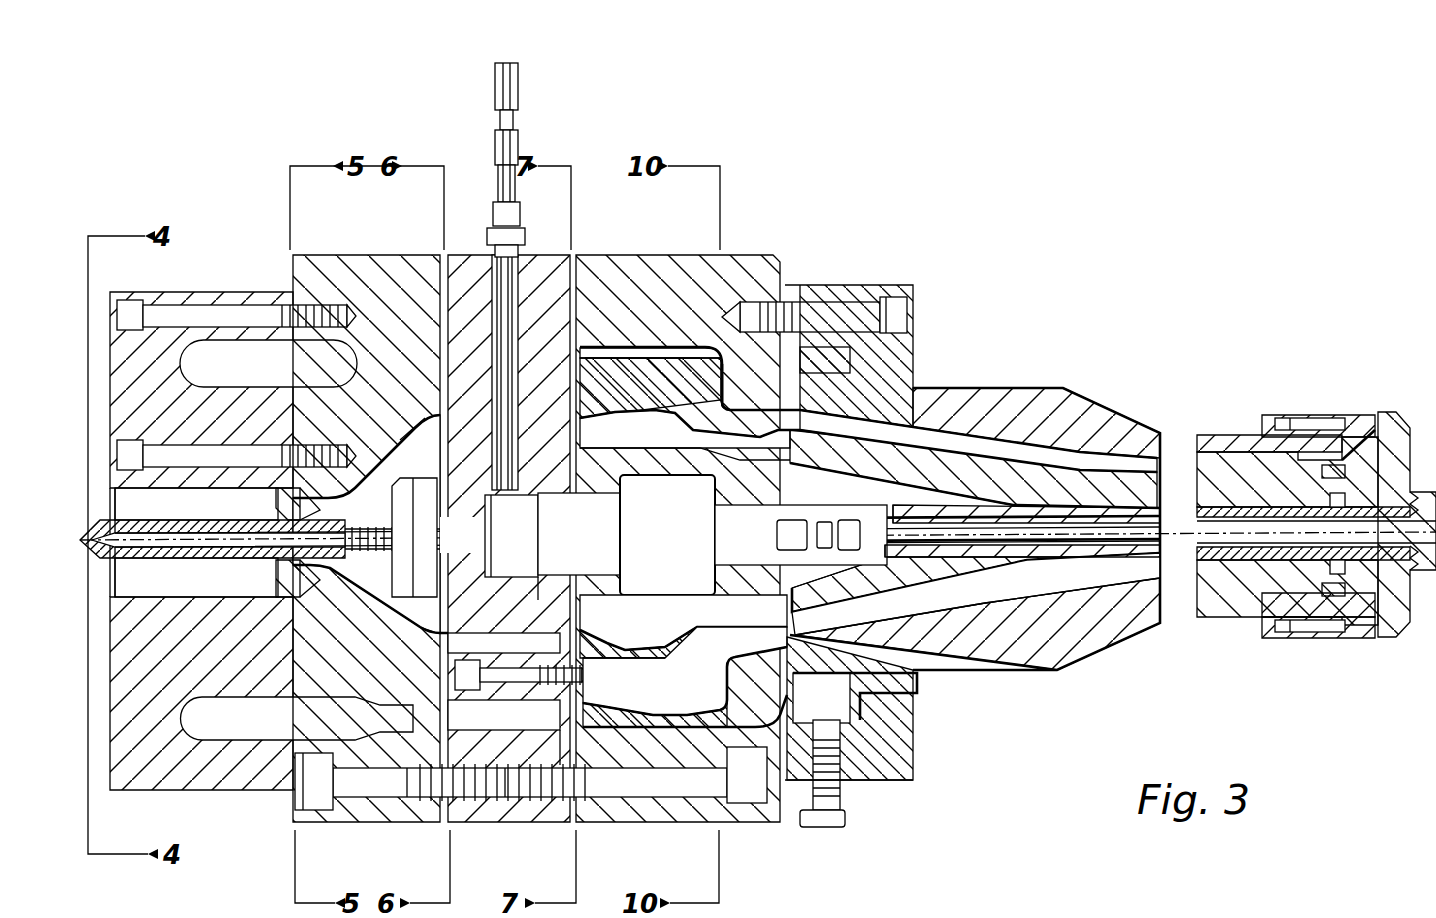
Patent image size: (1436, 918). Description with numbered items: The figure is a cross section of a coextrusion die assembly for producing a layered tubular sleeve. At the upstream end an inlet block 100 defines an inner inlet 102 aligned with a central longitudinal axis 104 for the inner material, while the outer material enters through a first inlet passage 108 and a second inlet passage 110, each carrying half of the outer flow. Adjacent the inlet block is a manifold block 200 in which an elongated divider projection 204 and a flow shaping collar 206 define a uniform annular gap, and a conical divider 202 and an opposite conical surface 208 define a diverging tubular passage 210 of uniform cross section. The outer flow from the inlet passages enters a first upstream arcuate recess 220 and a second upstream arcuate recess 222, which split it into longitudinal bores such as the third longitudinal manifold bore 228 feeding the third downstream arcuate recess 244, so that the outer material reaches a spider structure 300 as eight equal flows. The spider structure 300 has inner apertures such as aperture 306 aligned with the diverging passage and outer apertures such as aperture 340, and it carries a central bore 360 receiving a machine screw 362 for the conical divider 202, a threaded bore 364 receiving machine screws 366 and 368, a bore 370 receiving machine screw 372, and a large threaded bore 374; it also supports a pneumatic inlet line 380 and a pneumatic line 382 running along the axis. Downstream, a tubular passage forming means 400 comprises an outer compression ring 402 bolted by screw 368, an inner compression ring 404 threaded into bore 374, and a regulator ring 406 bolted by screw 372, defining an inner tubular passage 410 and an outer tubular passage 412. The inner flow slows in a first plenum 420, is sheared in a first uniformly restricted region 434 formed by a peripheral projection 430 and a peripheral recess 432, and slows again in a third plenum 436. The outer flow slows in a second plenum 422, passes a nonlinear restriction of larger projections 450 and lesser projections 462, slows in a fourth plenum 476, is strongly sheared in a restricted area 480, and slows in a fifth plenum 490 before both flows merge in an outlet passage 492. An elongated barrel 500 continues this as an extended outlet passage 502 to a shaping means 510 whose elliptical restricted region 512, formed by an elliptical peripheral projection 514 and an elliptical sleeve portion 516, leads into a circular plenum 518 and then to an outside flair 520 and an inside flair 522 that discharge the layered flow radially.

The inlet block 100 is at (238, 280).
The inner inlet 102 is at (196, 504).
The central longitudinal axis 104 is at (134, 548).
The first inlet passage 108 is at (268, 363).
The second inlet passage 110 is at (297, 718).
The manifold block 200 is at (413, 245).
The conical divider 202 is at (414, 537).
The divider projection 204 is at (268, 520).
The flow shaping collar 206 is at (292, 573).
The conical surface 208 is at (393, 443).
The diverging tubular passage 210 is at (332, 458).
The first upstream arcuate recess 220 is at (323, 363).
The second upstream arcuate recess 222 is at (323, 718).
The third longitudinal manifold bore 228 is at (333, 782).
The third downstream arcuate recess 244 is at (417, 710).
The spider structure 300 is at (457, 206).
The inner spider aperture 306 is at (494, 632).
The outer spider aperture 340 is at (504, 715).
The central bore 360 is at (477, 520).
The machine screw 362 is at (511, 536).
The threaded bore 364 is at (507, 800).
The machine screw 366 is at (407, 800).
The machine screw 368 is at (725, 777).
The bore 370 is at (513, 675).
The machine screw 372 is at (568, 718).
The large threaded bore 374 is at (548, 600).
The pneumatic inlet line 380 is at (520, 112).
The pneumatic line 382 is at (635, 545).
The tubular passage forming means 400 is at (651, 246).
The outer compression ring 402 is at (784, 255).
The inner compression ring 404 is at (626, 535).
The regulator ring 406 is at (688, 432).
The inner tubular passage 410 is at (746, 438).
The outer tubular passage 412 is at (700, 360).
The first plenum 420 is at (605, 636).
The second plenum 422 is at (655, 700).
The peripheral projection 430 is at (674, 655).
The peripheral recess 432 is at (705, 700).
The first uniformly restricted region 434 is at (722, 645).
The third plenum 436 is at (760, 640).
The larger projection 450 is at (622, 728).
The lesser projection 462 is at (640, 356).
The fourth plenum 476 is at (702, 362).
The restricted area 480 is at (724, 375).
The fifth plenum 490 is at (728, 398).
The outlet passage 492 is at (808, 420).
The elongated barrel 500 is at (1089, 390).
The extended outlet passage 502 is at (1133, 600).
The shaping means 510 is at (1295, 402).
The elliptical restricted region 512 is at (1250, 447).
The elliptical peripheral projection 514 is at (1260, 590).
The elliptical sleeve portion 516 is at (1283, 615).
The circular plenum 518 is at (1330, 457).
The outside flair 520 is at (1363, 638).
The inside flair 522 is at (1392, 640).